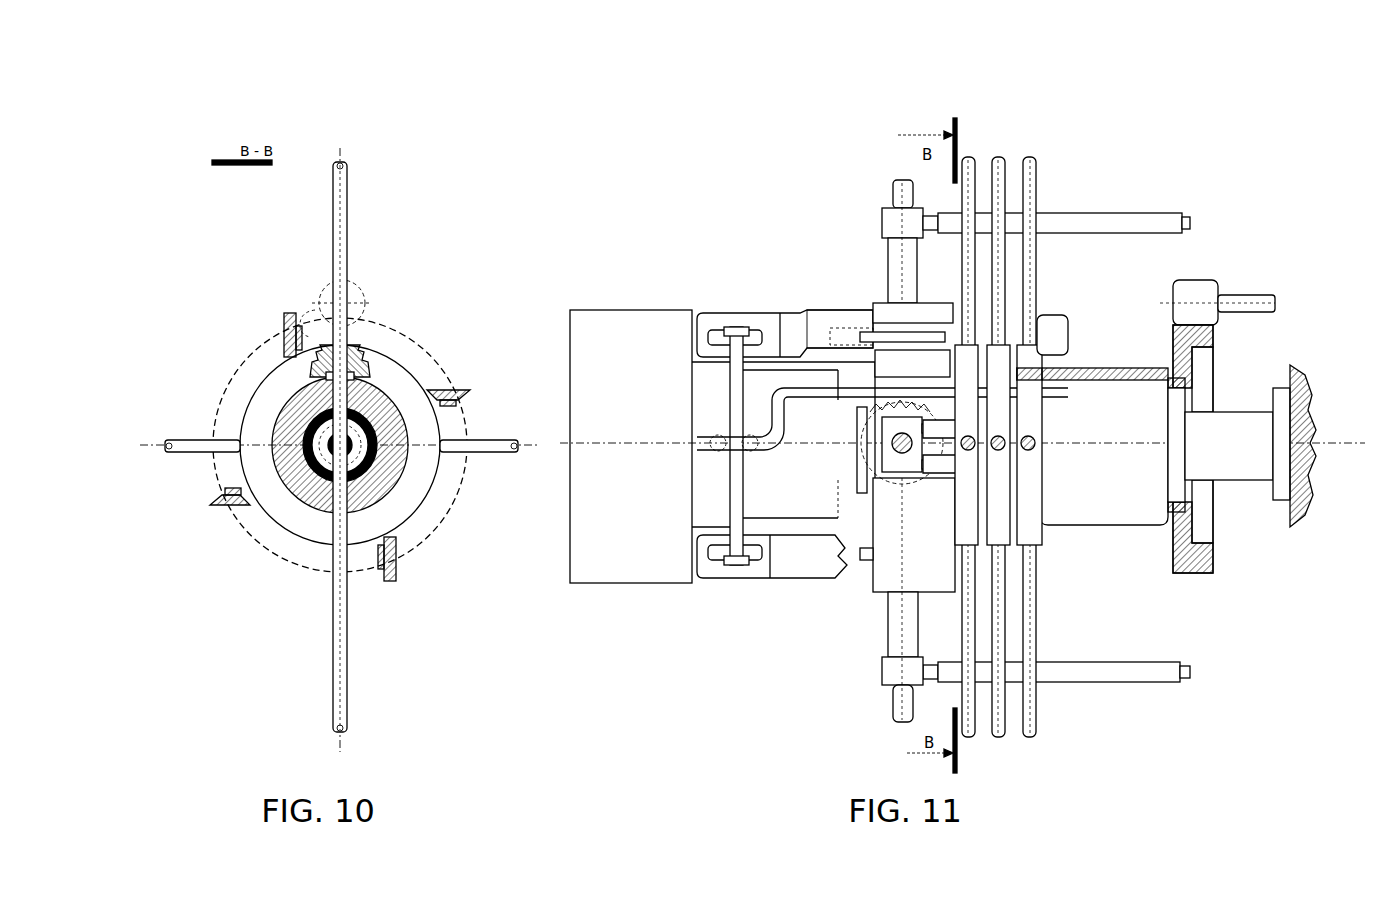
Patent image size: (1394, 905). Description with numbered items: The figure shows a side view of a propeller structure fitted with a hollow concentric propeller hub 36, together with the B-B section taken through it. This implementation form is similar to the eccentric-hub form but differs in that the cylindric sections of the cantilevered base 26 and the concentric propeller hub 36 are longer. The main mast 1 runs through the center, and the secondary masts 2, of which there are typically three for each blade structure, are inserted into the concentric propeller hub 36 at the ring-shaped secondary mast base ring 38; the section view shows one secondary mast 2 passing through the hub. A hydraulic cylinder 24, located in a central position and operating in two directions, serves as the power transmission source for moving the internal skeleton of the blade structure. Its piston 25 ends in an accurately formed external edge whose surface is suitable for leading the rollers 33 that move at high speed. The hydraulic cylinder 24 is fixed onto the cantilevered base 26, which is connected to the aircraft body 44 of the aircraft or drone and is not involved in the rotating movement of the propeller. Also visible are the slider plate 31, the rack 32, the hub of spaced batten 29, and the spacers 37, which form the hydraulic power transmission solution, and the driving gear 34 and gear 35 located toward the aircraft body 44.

In FIG. 11, the main mast 1 is at (895, 180).
In FIG. 10, the secondary mast 2 is at (340, 160).
In FIG. 11, the secondary mast 2 is at (968, 157).
In FIG. 11, the hydraulic cylinder 24 is at (577, 307).
In FIG. 11, the piston 25 is at (712, 378).
In FIG. 10, the cantilevered base 26 is at (307, 507).
In FIG. 11, the cantilevered base 26 is at (1232, 450).
In FIG. 11, the hub of spaced batten 29 is at (880, 232).
In FIG. 10, the slider plate 31 is at (295, 404).
In FIG. 11, the slider plate 31 is at (785, 315).
In FIG. 10, the rack 32 is at (315, 292).
In FIG. 11, the rack 32 is at (825, 312).
In FIG. 11, the rollers 33 is at (800, 470).
In FIG. 11, the driving gear 34 is at (1220, 285).
In FIG. 11, the gear 35 is at (1210, 572).
In FIG. 10, the concentric propeller hub 36 is at (275, 415).
In FIG. 11, the concentric propeller hub 36 is at (870, 588).
In FIG. 11, the spacers 37 is at (985, 502).
In FIG. 10, the secondary mast base ring 38 is at (385, 360).
In FIG. 11, the secondary mast base ring 38 is at (1043, 330).
In FIG. 11, the aircraft body 44 is at (1295, 395).